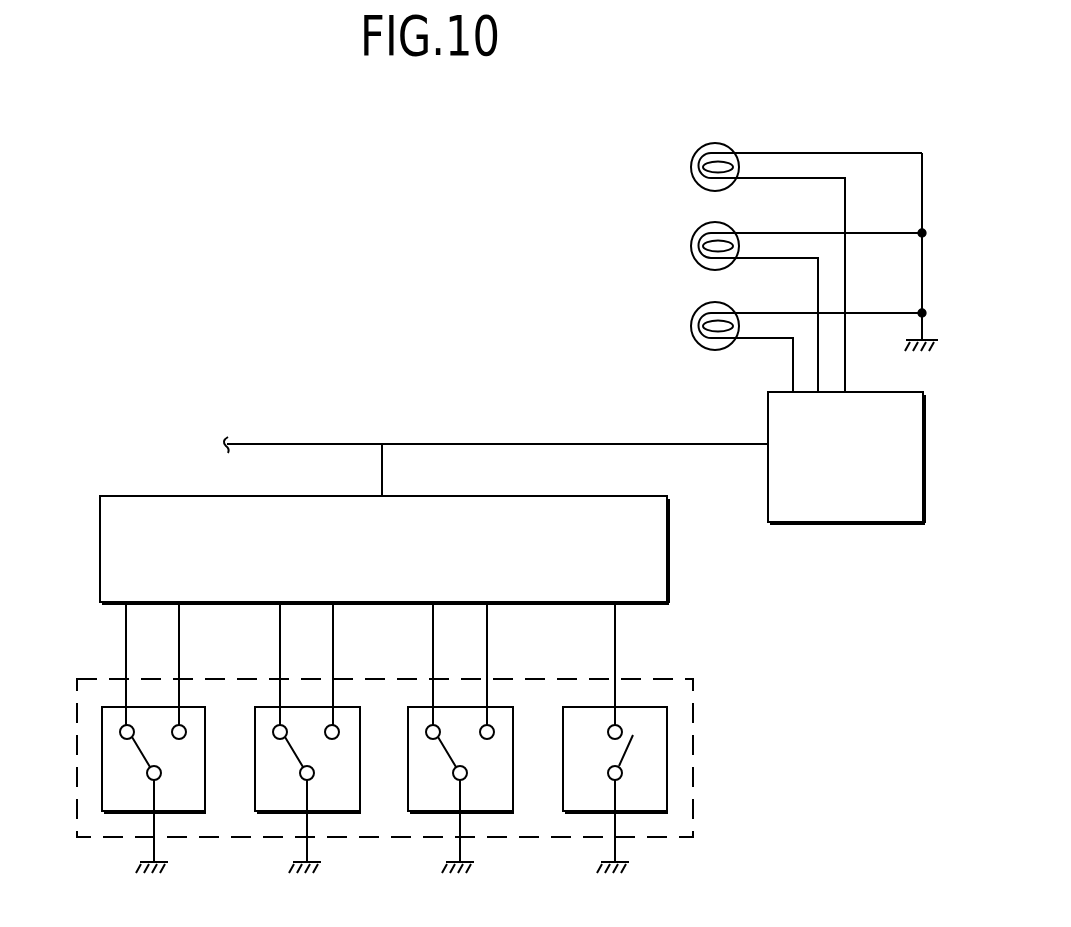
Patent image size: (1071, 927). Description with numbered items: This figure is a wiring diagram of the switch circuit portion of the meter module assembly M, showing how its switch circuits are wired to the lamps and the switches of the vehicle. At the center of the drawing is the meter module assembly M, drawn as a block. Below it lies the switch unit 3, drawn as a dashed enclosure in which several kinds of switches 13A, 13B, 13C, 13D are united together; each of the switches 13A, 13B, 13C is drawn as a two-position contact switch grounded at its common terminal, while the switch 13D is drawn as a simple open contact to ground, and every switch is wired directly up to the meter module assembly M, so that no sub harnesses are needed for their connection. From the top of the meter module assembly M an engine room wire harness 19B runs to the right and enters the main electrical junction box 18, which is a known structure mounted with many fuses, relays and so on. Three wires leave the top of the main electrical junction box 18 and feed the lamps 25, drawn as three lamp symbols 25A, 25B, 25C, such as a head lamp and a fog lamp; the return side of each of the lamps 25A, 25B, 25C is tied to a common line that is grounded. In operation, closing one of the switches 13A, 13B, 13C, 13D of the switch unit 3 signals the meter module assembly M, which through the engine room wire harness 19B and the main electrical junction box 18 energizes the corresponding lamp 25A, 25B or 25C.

The lamps 25 is at (408, 233).
The lamp 25A is at (690, 172).
The lamp 25B is at (690, 250).
The lamp 25C is at (690, 330).
The main electrical junction box 18 is at (852, 523).
The engine room wire harness 19B is at (554, 443).
The meter module assembly M is at (668, 526).
The switch unit 3 is at (693, 710).
The switch 13A is at (113, 812).
The switch 13B is at (270, 812).
The switch 13C is at (427, 812).
The switch 13D is at (580, 812).